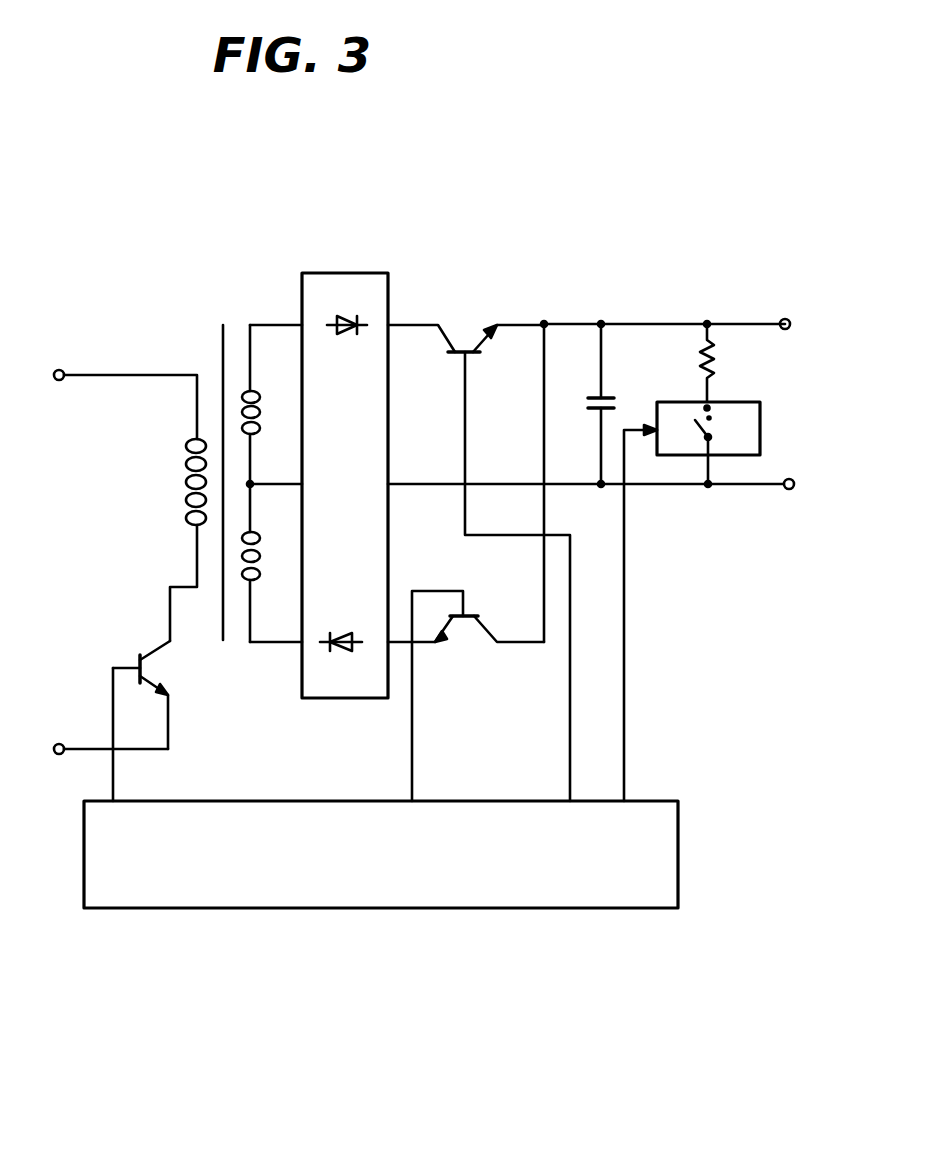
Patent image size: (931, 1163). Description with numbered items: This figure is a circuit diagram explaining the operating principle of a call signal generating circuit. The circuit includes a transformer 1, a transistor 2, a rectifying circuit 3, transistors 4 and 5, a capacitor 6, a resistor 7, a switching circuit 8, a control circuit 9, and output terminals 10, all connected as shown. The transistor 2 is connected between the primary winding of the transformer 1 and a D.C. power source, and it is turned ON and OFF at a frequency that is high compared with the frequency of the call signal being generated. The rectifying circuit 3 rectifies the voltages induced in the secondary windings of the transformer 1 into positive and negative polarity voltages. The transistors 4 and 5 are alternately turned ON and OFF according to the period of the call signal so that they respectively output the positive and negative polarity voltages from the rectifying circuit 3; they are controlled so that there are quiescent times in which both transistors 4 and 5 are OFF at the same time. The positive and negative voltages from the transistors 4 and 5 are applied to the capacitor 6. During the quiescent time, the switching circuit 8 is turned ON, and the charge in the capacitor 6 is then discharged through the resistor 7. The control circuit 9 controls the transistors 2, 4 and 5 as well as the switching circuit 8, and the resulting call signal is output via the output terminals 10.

The transformer 1 is at (222, 310).
The transistor 2 is at (148, 643).
The rectifying circuit 3 is at (322, 272).
The transistor 4 is at (470, 338).
The transistor 5 is at (463, 634).
The capacitor 6 is at (598, 396).
The resistor 7 is at (700, 368).
The switching circuit 8 is at (724, 402).
The control circuit 9 is at (511, 912).
The output terminals 10 is at (787, 332).